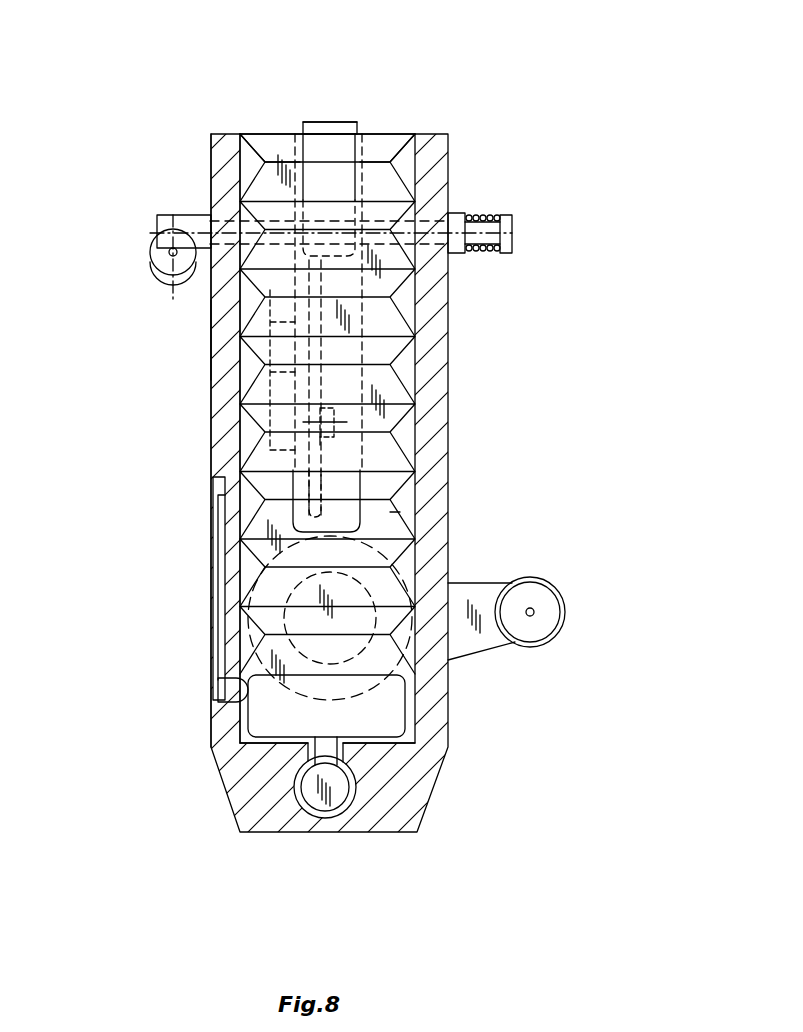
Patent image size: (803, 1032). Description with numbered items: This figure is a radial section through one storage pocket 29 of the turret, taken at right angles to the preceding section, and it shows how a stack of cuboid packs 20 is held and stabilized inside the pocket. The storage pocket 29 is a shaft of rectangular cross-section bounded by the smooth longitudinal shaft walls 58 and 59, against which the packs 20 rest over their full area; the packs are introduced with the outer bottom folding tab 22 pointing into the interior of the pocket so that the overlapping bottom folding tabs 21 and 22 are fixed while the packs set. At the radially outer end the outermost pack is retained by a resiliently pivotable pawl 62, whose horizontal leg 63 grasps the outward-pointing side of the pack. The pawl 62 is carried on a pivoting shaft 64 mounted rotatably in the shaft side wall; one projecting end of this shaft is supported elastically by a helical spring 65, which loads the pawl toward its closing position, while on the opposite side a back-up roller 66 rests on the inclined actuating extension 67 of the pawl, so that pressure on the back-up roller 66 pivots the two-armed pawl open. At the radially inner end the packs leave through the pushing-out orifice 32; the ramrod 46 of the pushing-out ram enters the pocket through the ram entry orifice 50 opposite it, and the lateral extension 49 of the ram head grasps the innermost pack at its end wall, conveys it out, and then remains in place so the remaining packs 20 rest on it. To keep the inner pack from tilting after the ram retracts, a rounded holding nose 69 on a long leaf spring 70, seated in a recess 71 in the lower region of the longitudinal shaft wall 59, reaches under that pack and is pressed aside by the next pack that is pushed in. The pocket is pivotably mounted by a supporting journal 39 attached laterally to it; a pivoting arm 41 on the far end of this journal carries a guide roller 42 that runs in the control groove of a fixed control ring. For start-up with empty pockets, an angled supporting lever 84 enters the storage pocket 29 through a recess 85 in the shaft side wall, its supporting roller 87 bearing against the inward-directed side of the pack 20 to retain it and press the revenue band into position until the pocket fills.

The cuboid packs 20 is at (387, 136).
The bottom folding tab 21 is at (273, 152).
The outer bottom folding tab 22 is at (390, 190).
The storage pocket 29 is at (190, 332).
The pushing-out orifice 32 is at (436, 747).
The ram entry orifice 50 is at (408, 728).
The supporting journal 39 is at (448, 665).
The pivoting arm 41 is at (480, 595).
The guide roller 42 is at (565, 618).
The ramrod 46 is at (325, 800).
The lateral extension 49 is at (278, 710).
The longitudinal shaft wall 58 is at (433, 312).
The longitudinal shaft wall 59 is at (213, 390).
The pawl 62 is at (332, 114).
The horizontal leg 63 is at (343, 125).
The pivoting shaft 64 is at (457, 200).
The helical spring 65 is at (487, 213).
The back-up roller 66 is at (158, 258).
The actuating extension 67 is at (175, 215).
The holding nose 69 is at (228, 690).
The leaf spring 70 is at (213, 603).
The recess 71 is at (213, 520).
The supporting lever 84 is at (320, 448).
The recess 85 is at (388, 512).
The supporting roller 87 is at (450, 433).